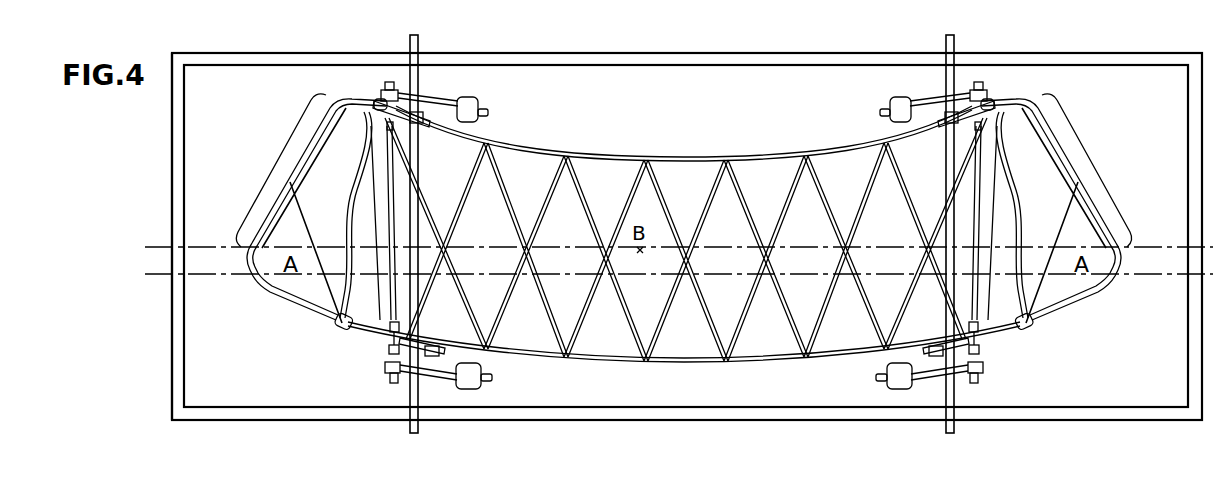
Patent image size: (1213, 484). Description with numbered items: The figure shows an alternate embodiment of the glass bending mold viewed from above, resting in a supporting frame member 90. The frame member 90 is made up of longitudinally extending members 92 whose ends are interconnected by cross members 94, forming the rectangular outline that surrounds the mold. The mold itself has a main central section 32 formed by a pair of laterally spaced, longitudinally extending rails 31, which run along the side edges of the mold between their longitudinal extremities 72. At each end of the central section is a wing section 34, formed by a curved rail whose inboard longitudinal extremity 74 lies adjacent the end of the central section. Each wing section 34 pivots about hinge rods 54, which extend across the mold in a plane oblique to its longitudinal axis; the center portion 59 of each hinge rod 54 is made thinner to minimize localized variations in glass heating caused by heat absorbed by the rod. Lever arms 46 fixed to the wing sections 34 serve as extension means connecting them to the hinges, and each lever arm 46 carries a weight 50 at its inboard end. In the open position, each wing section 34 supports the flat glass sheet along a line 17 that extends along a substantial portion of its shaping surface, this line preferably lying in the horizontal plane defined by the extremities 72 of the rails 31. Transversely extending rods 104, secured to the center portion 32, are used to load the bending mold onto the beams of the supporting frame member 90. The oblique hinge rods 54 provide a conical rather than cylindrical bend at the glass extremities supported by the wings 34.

The line of support 17 is at (282, 163).
The rails 31 is at (619, 152).
The main central section 32 is at (707, 150).
The wing sections 34 is at (291, 312).
The lever arms 46 is at (925, 383).
The weight 50 is at (888, 98).
The hinge rods 54 is at (988, 86).
The center portion of the hinge rods 59 is at (393, 214).
The longitudinal extremities 72 is at (354, 196).
The inboard longitudinal extremity 74 is at (384, 104).
The frame member 90 is at (170, 340).
The longitudinally extending members 92 is at (725, 53).
The cross members 94 is at (173, 196).
The transversely extending rods 104 is at (419, 41).